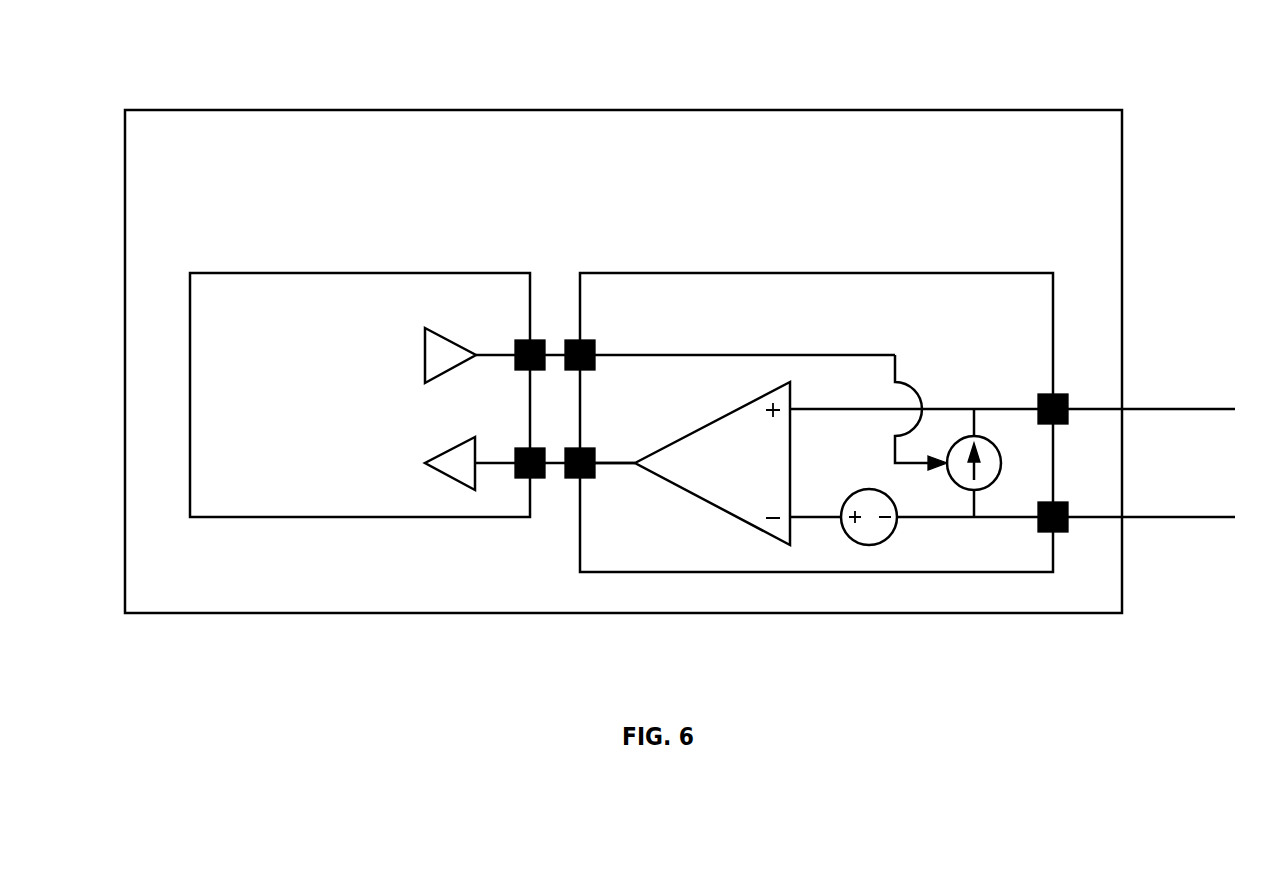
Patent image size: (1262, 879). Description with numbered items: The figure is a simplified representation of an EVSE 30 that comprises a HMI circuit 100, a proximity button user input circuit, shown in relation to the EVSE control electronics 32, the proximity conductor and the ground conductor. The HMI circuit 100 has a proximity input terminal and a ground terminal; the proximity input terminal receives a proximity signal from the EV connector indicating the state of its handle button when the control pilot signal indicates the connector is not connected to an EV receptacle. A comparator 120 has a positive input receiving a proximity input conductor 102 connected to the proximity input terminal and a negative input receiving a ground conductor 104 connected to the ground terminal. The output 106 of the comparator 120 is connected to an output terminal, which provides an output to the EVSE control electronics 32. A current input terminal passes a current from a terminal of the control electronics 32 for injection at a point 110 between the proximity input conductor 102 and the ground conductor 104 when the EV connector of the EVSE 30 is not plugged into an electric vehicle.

The EVSE 30 is at (835, 109).
The EVSE control electronics 32 is at (367, 273).
The HMI circuit 100 is at (988, 212).
The proximity input conductor 102 is at (1007, 409).
The ground conductor 104 is at (938, 520).
The output 106 is at (617, 463).
The point 110 is at (962, 437).
The comparator 120 is at (742, 503).